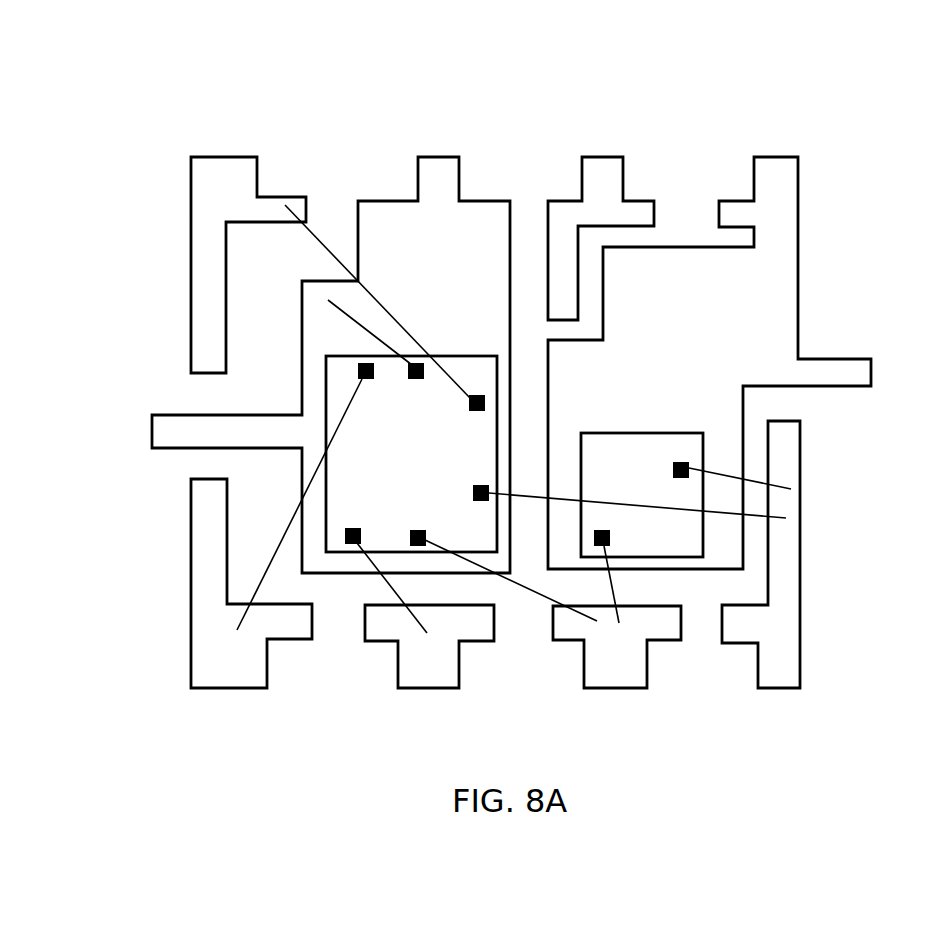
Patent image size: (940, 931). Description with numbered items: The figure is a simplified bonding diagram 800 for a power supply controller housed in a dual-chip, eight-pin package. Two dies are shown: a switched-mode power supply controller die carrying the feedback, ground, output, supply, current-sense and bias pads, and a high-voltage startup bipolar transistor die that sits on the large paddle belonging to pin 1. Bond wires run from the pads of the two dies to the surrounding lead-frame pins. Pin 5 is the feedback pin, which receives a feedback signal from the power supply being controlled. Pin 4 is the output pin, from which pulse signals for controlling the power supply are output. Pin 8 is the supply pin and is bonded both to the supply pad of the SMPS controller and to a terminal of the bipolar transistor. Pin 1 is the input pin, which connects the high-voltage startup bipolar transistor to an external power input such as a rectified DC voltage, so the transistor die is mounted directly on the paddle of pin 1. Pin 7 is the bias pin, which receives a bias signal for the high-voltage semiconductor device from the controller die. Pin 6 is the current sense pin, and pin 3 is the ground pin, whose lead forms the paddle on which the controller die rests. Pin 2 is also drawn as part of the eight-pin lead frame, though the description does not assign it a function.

The bonding diagram 800 is at (830, 113).
The Vin pin 1 is at (709, 363).
The pin 2 is at (601, 238).
The GND pin 3 is at (331, 365).
The OUT pin 4 is at (248, 265).
The Vfb pin 5 is at (251, 583).
The Vcs pin 6 is at (429, 646).
The Vb pin 7 is at (617, 647).
The Vcc pin 8 is at (761, 554).